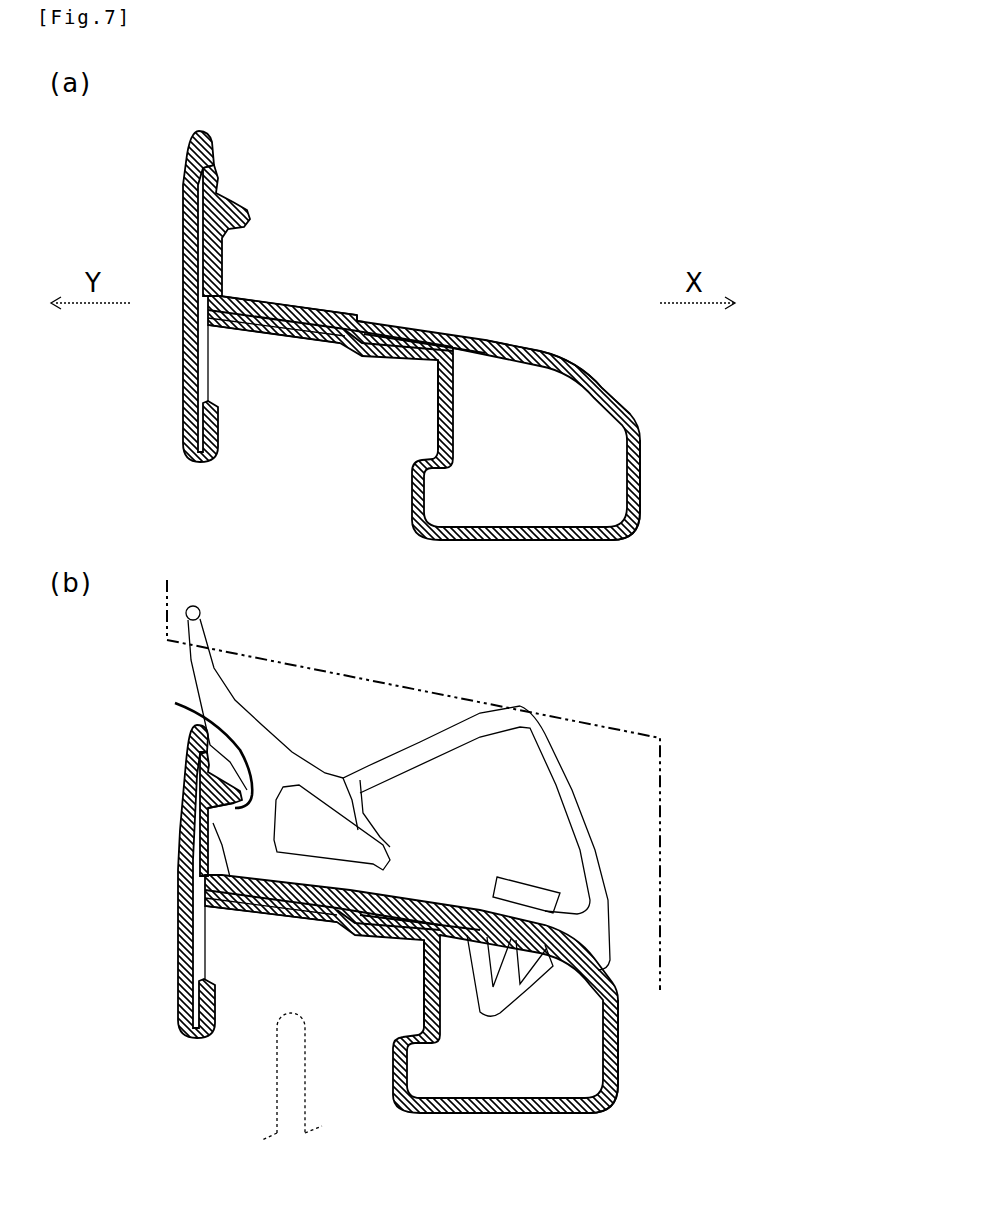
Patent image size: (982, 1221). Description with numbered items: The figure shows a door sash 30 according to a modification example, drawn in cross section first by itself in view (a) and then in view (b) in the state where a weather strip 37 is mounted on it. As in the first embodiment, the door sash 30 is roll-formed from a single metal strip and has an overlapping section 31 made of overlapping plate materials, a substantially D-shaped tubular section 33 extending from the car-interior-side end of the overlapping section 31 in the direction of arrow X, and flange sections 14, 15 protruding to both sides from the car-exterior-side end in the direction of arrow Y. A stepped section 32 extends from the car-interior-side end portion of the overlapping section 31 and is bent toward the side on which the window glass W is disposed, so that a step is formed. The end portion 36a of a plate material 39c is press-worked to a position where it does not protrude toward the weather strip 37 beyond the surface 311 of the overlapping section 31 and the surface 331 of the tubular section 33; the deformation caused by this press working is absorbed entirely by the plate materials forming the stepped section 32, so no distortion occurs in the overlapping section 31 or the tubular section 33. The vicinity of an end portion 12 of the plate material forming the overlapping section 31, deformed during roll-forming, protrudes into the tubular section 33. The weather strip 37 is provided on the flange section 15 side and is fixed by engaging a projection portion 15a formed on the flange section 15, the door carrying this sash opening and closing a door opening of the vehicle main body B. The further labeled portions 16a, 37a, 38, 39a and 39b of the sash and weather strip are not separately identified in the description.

The end portion 12 is at (447, 358).
The flange section 14 is at (188, 383).
The flange section 15 is at (195, 180).
The projection portion 15a is at (233, 808).
The step portion 16a is at (363, 318).
The door sash 30 is at (560, 344).
The overlapping section 31 is at (246, 297).
The surface 311 is at (298, 297).
The stepped section 32 is at (372, 353).
The tubular section 33 is at (640, 453).
The surface 331 is at (528, 340).
The end portion 36a is at (357, 897).
The weather strip 37 is at (296, 750).
The garnish hook 37a is at (191, 745).
The projection 38 is at (540, 893).
The first lip 39a is at (292, 328).
The second lip 39b is at (247, 320).
The plate material 39c is at (430, 332).
The vehicle main body B is at (590, 727).
The window glass W is at (296, 1083).